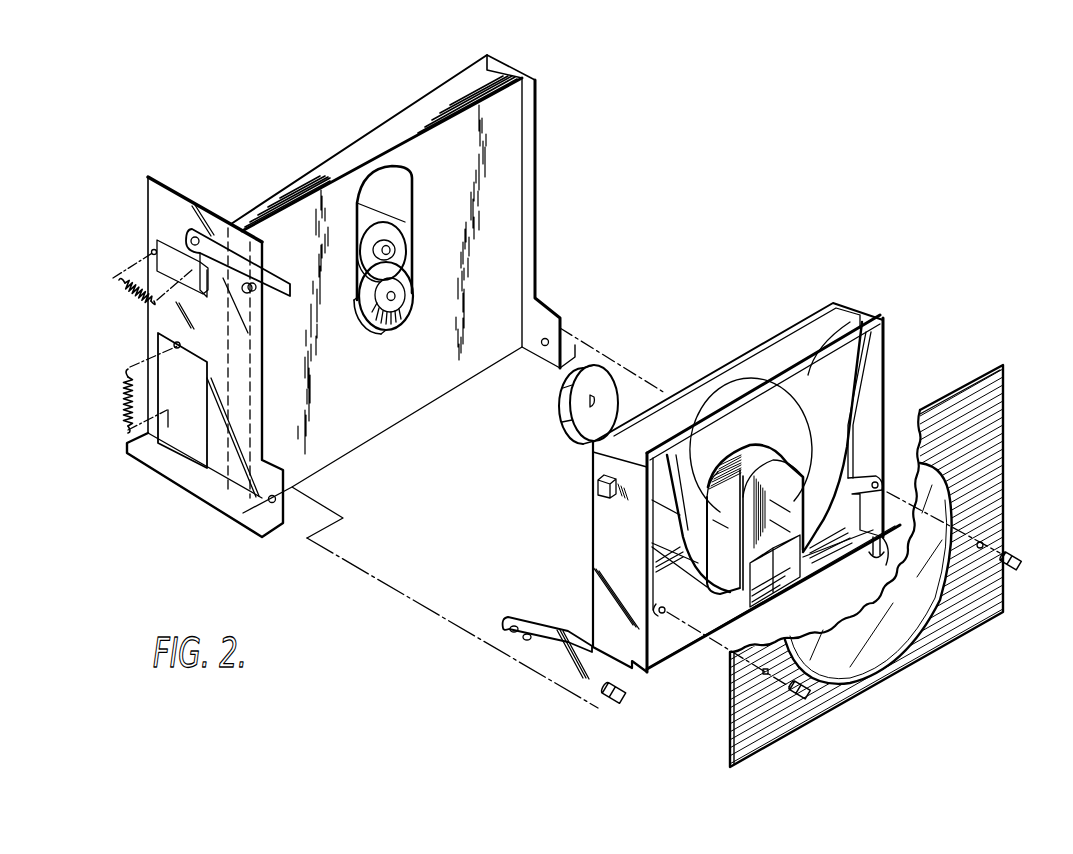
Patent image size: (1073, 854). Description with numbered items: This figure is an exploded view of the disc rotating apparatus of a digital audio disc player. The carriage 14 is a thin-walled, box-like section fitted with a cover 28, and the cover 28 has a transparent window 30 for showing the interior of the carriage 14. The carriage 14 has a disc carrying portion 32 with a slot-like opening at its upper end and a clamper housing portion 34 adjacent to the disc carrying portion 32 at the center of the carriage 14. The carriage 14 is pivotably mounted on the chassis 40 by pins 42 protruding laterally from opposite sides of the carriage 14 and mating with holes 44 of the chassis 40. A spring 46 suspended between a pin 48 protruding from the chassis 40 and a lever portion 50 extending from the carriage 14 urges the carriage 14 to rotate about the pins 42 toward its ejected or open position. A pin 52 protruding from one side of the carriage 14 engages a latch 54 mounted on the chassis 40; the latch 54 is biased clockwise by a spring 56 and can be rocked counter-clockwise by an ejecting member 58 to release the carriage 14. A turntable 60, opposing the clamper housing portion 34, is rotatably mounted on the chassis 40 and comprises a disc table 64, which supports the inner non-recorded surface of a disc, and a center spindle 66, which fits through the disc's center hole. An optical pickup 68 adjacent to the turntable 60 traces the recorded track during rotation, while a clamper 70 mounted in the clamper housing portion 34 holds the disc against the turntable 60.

The carriage 14 is at (885, 352).
The cover 28 is at (1003, 425).
The transparent window 30 is at (882, 637).
The disc carrying portion 32 is at (807, 327).
The clamper housing portion 34 is at (780, 482).
The chassis 40 is at (503, 217).
The pins 42 is at (615, 705).
The holes 44 is at (278, 497).
The spring 46 is at (123, 404).
The pin 48 is at (178, 349).
The lever portion 50 is at (562, 647).
The pin 52 is at (597, 483).
The latch 54 is at (263, 276).
The spring 56 is at (125, 300).
The ejecting member 58 is at (250, 292).
The turntable 60 is at (400, 322).
The disc table 64 is at (408, 274).
The center spindle 66 is at (402, 293).
The optical pickup 68 is at (398, 236).
The clamper 70 is at (570, 423).